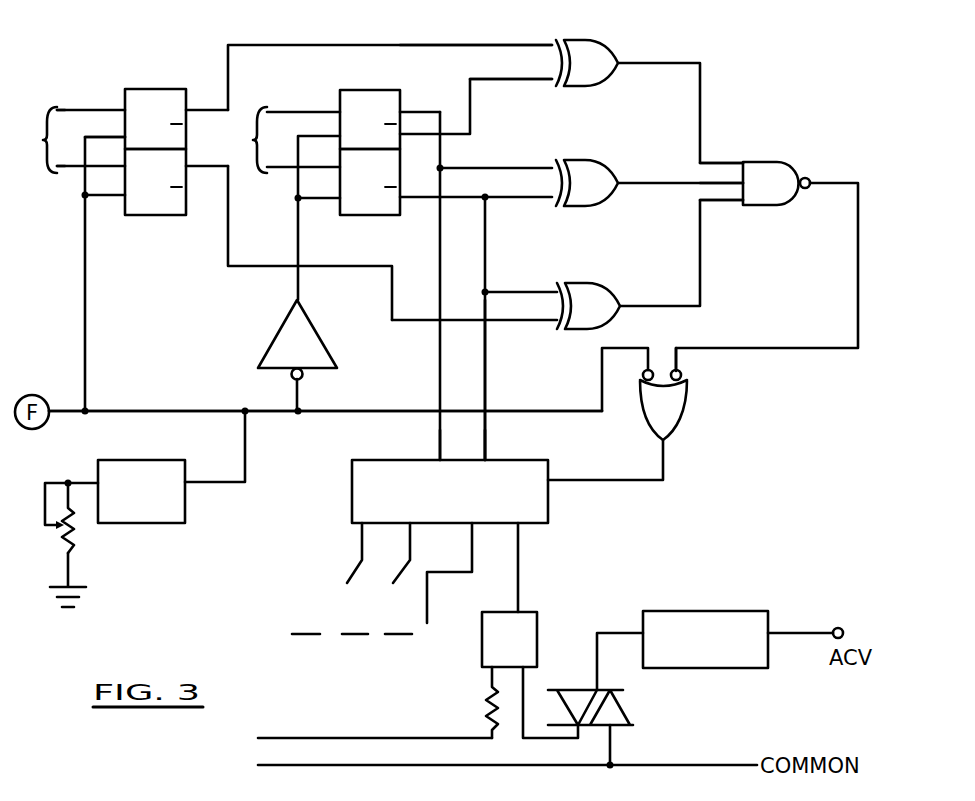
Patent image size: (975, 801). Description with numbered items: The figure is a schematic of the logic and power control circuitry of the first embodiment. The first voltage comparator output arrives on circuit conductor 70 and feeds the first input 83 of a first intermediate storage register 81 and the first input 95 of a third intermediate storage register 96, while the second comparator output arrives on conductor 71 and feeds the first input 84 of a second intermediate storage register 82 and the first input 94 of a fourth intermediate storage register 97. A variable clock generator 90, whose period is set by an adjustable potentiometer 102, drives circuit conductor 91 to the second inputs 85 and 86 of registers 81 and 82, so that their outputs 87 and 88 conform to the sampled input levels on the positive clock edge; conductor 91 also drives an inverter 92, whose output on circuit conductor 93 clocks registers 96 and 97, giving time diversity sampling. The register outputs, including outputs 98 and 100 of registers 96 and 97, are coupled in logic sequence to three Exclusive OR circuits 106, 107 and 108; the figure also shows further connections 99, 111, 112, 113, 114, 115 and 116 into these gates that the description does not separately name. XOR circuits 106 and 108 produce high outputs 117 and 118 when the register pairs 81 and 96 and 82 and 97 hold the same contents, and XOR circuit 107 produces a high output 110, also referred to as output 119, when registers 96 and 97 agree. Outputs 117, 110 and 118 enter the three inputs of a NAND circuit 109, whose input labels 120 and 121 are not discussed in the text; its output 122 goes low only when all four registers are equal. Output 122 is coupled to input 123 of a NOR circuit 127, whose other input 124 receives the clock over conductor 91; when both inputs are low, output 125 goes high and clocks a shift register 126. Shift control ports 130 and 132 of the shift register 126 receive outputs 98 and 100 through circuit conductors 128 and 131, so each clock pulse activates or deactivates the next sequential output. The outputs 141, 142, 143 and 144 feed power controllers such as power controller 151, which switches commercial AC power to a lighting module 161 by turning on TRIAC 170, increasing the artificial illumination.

The circuit conductor 70 is at (69, 93).
The circuit conductor 71 is at (61, 175).
The first intermediate storage register 81 is at (146, 72).
The second intermediate storage register 82 is at (146, 211).
The first input 83 is at (91, 100).
The first input 84 is at (91, 157).
The second input 85 is at (105, 128).
The second input 86 is at (105, 186).
The output 87 is at (207, 99).
The output 88 is at (207, 155).
The clock generator 90 is at (157, 503).
The circuit conductor 91 is at (128, 411).
The inverter 92 is at (311, 362).
The circuit conductor 93 is at (319, 186).
The first input 94 is at (270, 188).
The first input 95 is at (274, 93).
The third intermediate storage register 96 is at (362, 72).
The fourth intermediate storage register 97 is at (362, 211).
The output 98 is at (420, 103).
The Q-bar output line of flip-flop 96 99 is at (476, 107).
The output 100 is at (476, 186).
The adjustable potentiometer 102 is at (55, 518).
The Exclusive OR circuit 106 is at (587, 63).
The Exclusive OR circuit 107 is at (587, 183).
The Exclusive OR circuit 108 is at (588, 306).
The NAND circuit 109 is at (776, 183).
The output 110 is at (621, 180).
The first input line of exclusive-OR gate 106 111 is at (474, 42).
The second input line of exclusive-OR gate 106 112 is at (478, 76).
The first input line of exclusive-OR gate 108 113 is at (504, 285).
The second input line of exclusive-OR gate 108 114 is at (504, 313).
The first input line of exclusive-OR gate 107 115 is at (507, 165).
The second input line of exclusive-OR gate 107 116 is at (508, 203).
The output 117 is at (619, 60).
The output 118 is at (622, 302).
The output 119 is at (721, 152).
The third input of NAND gate 109 120 is at (721, 216).
The second input of NAND gate 109 121 is at (721, 174).
The output 122 is at (767, 266).
The input 123 is at (697, 361).
The input 124 is at (625, 379).
The output 125 is at (626, 460).
The shift register 126 is at (470, 503).
The NOR circuit 127 is at (663, 405).
The circuit conductor 128 is at (437, 376).
The shift control port 130 is at (437, 453).
The circuit conductor 131 is at (487, 378).
The shift control port 132 is at (487, 455).
The output 141 is at (536, 567).
The output 142 is at (468, 573).
The output 143 is at (420, 553).
The output 144 is at (373, 553).
The power controller 151 is at (526, 651).
The lighting module 161 is at (722, 637).
The TRIAC 170 is at (644, 706).